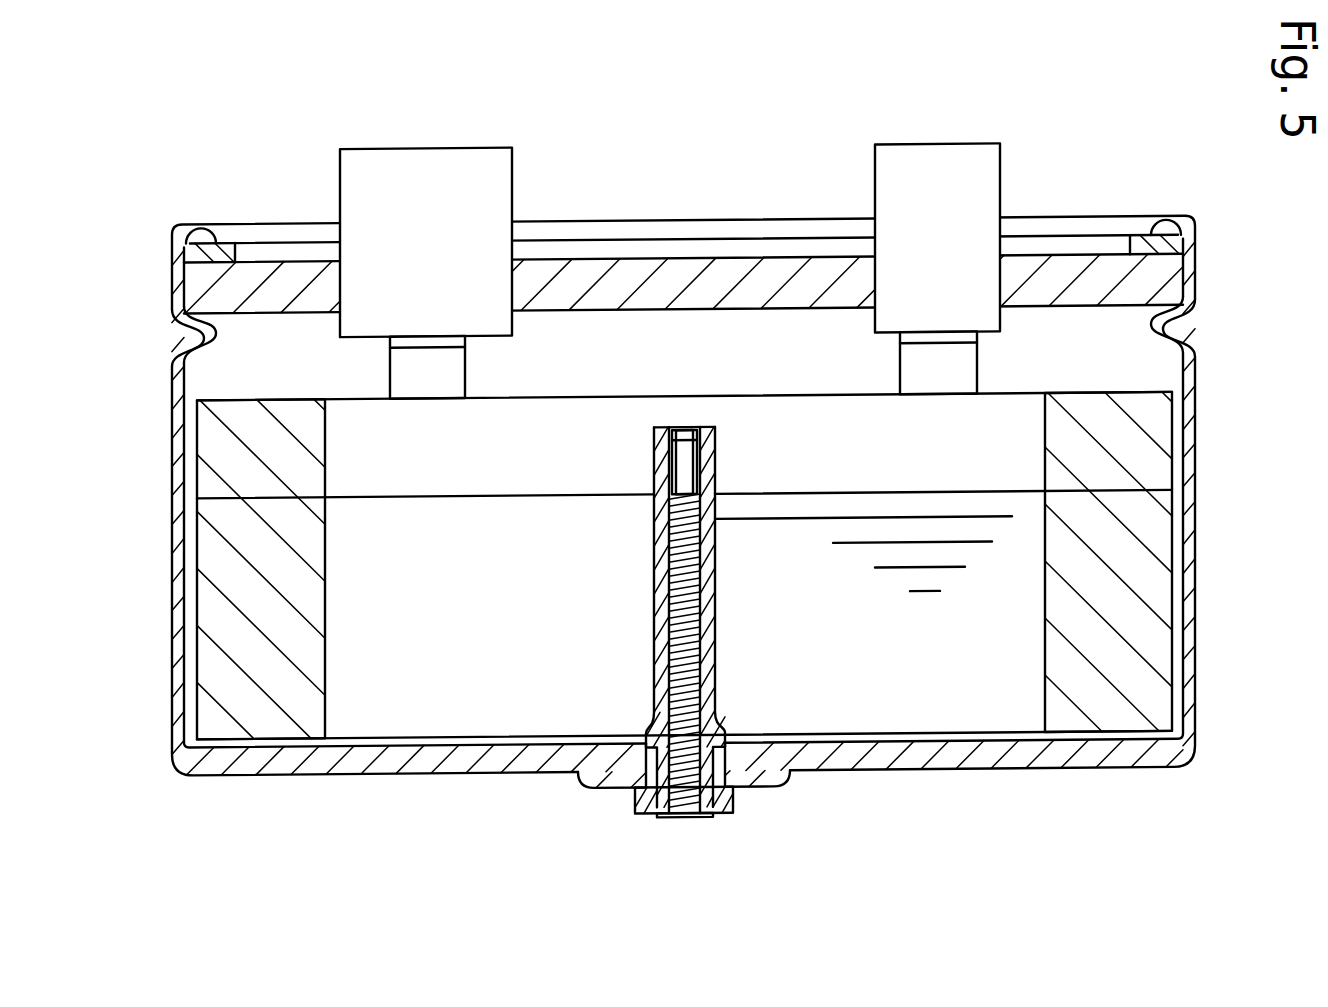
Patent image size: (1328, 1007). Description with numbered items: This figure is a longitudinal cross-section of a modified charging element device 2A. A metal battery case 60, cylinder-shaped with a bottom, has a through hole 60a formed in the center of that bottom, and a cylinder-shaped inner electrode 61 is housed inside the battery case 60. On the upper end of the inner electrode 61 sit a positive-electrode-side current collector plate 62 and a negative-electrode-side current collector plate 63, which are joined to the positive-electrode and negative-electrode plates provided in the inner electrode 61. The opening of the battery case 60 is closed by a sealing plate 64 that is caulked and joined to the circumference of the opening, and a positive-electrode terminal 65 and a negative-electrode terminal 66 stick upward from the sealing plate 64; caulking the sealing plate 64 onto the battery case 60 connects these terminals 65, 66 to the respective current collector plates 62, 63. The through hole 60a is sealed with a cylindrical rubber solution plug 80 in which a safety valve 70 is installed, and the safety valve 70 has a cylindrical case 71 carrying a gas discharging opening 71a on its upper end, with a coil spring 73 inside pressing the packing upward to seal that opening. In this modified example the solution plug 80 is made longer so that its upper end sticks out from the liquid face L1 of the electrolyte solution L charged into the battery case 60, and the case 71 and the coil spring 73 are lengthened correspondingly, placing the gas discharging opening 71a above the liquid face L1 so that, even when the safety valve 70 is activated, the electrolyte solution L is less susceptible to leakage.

The charging element device 2A is at (699, 93).
The battery case 60 is at (1197, 513).
The through hole 60a is at (642, 808).
The inner electrode 61 is at (623, 396).
The positive-electrode-side current collector plate 62 is at (467, 373).
The negative-electrode-side current collector plate 63 is at (898, 363).
The sealing plate 64 is at (767, 237).
The positive-electrode terminal 65 is at (452, 146).
The negative-electrode terminal 66 is at (910, 146).
The safety valve 70 is at (715, 577).
The case 71 is at (663, 538).
The gas discharging opening 71a is at (686, 430).
The coil spring 73 is at (687, 790).
The solution plug 80 is at (654, 601).
The electrolyte solution L is at (403, 537).
The liquid face L1 is at (858, 492).